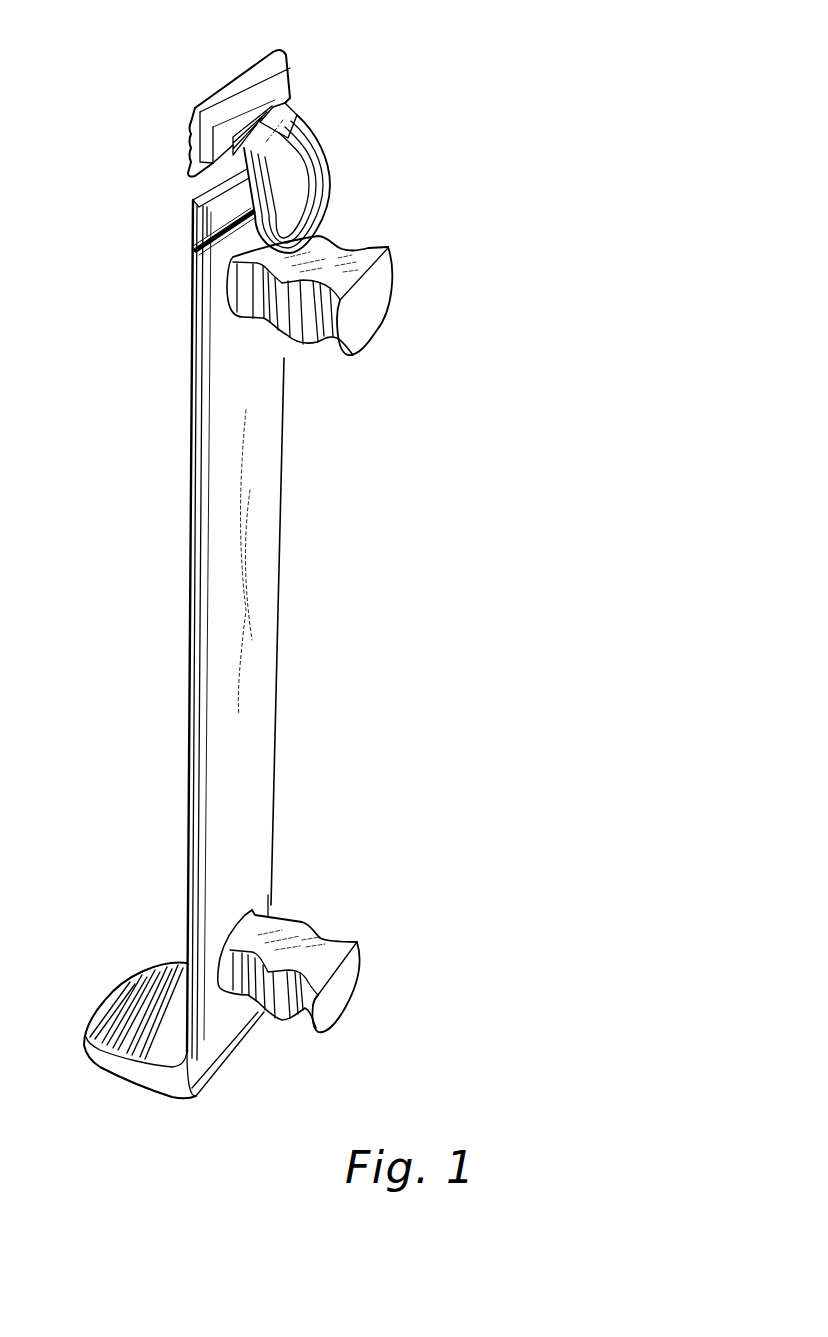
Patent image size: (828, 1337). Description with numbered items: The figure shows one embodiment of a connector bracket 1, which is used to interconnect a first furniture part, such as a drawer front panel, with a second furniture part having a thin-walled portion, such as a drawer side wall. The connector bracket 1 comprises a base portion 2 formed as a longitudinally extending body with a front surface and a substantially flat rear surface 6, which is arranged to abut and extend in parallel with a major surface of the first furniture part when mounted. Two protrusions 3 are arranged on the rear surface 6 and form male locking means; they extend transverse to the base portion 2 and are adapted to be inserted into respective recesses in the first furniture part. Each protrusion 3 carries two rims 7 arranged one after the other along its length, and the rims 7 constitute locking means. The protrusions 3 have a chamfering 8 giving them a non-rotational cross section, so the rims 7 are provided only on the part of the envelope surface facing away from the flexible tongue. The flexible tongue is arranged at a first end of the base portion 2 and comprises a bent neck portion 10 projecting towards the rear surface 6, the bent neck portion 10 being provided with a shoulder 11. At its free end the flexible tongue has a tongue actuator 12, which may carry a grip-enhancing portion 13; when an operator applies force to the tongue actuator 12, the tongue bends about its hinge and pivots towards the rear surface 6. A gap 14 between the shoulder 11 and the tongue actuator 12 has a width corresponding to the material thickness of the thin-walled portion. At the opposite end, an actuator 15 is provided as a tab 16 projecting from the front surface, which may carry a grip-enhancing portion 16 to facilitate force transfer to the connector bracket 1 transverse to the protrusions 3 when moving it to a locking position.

The connector bracket 1 is at (410, 470).
The base portion 2 is at (258, 735).
The protrusion 3 is at (340, 990).
The rear surface 6 is at (247, 778).
The rim 7 is at (305, 342).
The chamfering 8 is at (350, 260).
The bent neck portion 10 is at (317, 195).
The shoulder 11 is at (288, 112).
The tongue actuator 12 is at (184, 171).
The grip-enhancing portion 13 is at (188, 152).
The gap 14 is at (247, 127).
The actuator 15 is at (120, 1066).
The tab with grip-enhancing portion 16 is at (132, 995).